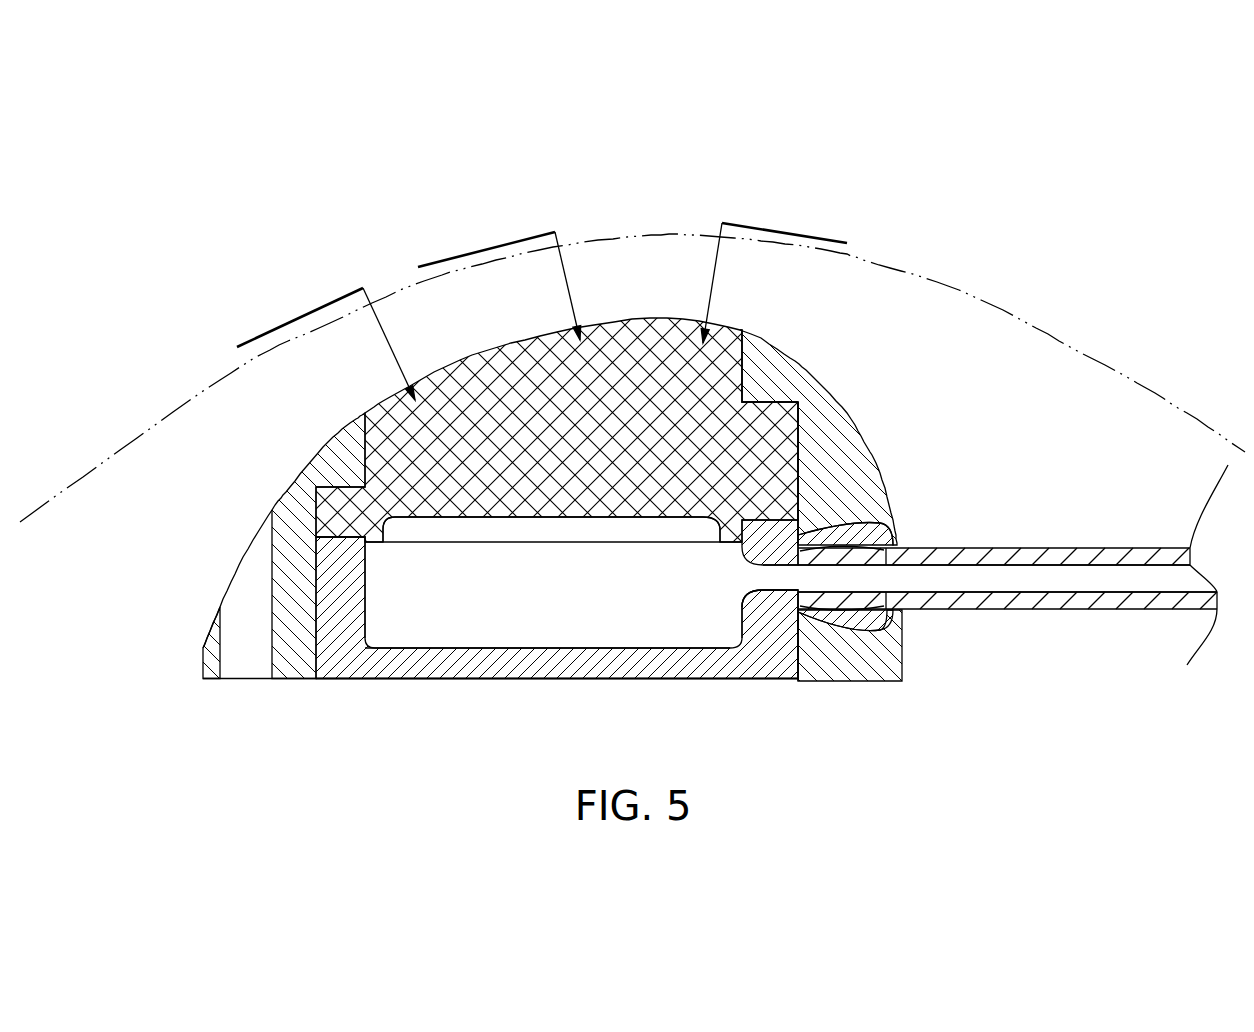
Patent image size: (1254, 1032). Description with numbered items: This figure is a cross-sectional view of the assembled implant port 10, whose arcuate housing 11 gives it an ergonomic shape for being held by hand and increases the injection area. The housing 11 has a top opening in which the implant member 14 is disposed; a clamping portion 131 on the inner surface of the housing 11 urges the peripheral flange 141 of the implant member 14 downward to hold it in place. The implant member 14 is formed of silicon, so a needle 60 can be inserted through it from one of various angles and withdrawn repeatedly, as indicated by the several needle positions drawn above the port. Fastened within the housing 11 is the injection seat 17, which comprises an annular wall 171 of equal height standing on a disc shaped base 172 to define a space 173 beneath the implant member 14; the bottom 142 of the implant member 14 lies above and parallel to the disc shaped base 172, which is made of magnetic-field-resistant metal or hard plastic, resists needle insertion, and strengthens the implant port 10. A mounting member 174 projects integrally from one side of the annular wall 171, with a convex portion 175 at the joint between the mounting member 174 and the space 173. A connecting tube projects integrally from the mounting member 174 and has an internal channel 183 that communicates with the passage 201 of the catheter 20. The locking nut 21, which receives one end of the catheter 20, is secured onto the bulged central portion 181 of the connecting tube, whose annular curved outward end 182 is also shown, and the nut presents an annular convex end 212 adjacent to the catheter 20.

The implant port 10 is at (253, 421).
The housing 11 is at (931, 442).
The clamping portion 131 is at (757, 378).
The implant member 14 is at (686, 334).
The peripheral flange 141 is at (800, 435).
The bottom 142 is at (493, 507).
The injection seat 17 is at (487, 648).
The annular wall 171 is at (333, 590).
The disc shaped base 172 is at (570, 655).
The space 173 is at (460, 617).
The mounting member 174 is at (770, 637).
The convex portion 175 is at (748, 598).
The bulged central portion 181 is at (805, 535).
The annular curved outward end 182 is at (887, 560).
The internal channel 183 is at (873, 578).
The catheter 20 is at (995, 602).
The passage 201 is at (1087, 580).
The locking nut 21 is at (855, 520).
The annular convex end 212 is at (897, 641).
The needle 60 is at (300, 315).